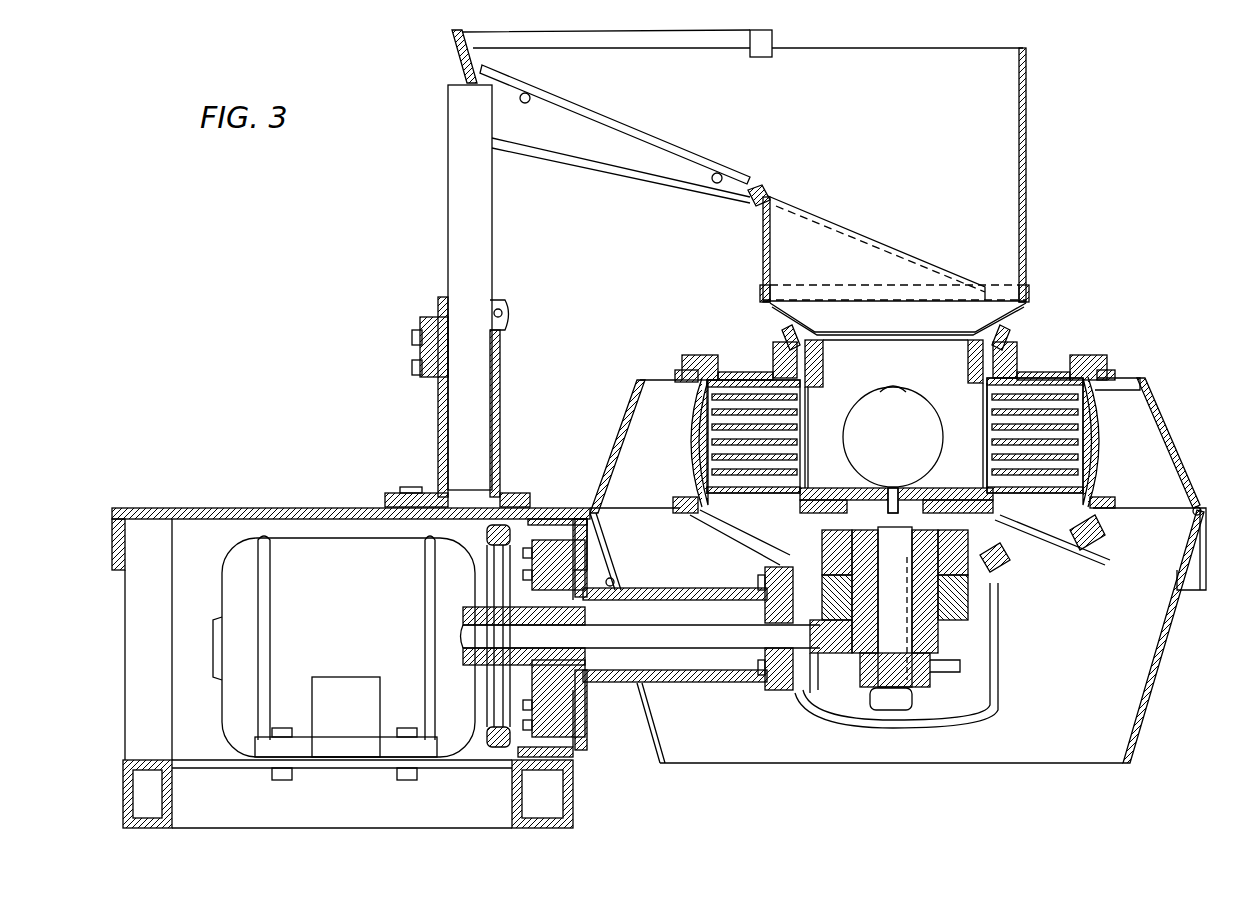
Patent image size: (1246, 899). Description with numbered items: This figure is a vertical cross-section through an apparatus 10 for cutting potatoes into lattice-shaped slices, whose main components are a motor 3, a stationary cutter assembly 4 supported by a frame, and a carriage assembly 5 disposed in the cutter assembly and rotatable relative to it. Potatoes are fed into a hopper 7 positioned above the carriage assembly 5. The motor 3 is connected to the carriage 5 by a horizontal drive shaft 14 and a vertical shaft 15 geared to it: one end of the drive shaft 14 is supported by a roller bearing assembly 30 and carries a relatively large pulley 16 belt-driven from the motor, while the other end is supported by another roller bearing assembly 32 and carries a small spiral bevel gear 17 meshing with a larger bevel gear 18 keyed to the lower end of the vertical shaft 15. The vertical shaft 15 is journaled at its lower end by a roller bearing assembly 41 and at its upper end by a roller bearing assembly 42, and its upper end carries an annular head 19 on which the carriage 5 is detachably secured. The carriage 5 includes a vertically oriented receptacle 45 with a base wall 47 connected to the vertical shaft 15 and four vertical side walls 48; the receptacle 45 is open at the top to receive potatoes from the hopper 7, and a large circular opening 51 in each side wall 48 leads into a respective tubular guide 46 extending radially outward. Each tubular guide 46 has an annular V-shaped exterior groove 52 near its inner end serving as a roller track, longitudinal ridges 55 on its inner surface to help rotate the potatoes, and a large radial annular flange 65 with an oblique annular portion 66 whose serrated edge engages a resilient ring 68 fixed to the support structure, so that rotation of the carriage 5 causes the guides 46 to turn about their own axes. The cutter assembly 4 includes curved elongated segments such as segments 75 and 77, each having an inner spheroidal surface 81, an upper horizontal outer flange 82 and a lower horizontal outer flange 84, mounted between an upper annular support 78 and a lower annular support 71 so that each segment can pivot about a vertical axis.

The motor 3 is at (349, 615).
The stationary cutter assembly 4 is at (662, 331).
The carriage assembly 5 is at (1043, 283).
The hopper 7 is at (1026, 86).
The apparatus 10 is at (385, 270).
The drive shaft 14 is at (695, 640).
The vertical shaft 15 is at (904, 673).
The pulley 16 is at (487, 578).
The spiral bevel gear 17 is at (825, 655).
The bevel gear 18 is at (985, 680).
The annular head 19 is at (888, 500).
The roller bearing assembly 30 is at (570, 620).
The roller bearing assembly 32 is at (765, 655).
The roller bearing assembly 41 is at (960, 650).
The roller bearing assembly 42 is at (980, 575).
The receptacle 45 is at (840, 340).
The tubular guides 46 is at (730, 360).
The base wall 47 is at (945, 490).
The side walls 48 is at (950, 345).
The circular opening 51 is at (825, 400).
The V-shaped exterior groove 52 is at (770, 365).
The ridges 55 is at (700, 440).
The radial annular flange 65 is at (770, 510).
The annular portion 66 is at (778, 342).
The resilient ring 68 is at (1025, 560).
The lower annular support 71 is at (1100, 530).
The curved elongated segment 75 is at (690, 400).
The curved elongated segment 77 is at (1100, 490).
The upper annular support 78 is at (1105, 355).
The inner spheroidal surface 81 is at (640, 410).
The upper horizontal outer flange 82 is at (676, 376).
The lower horizontal outer flange 84 is at (670, 495).